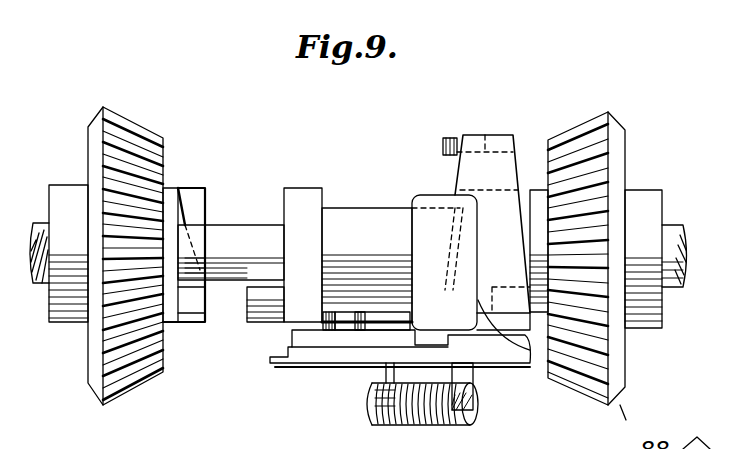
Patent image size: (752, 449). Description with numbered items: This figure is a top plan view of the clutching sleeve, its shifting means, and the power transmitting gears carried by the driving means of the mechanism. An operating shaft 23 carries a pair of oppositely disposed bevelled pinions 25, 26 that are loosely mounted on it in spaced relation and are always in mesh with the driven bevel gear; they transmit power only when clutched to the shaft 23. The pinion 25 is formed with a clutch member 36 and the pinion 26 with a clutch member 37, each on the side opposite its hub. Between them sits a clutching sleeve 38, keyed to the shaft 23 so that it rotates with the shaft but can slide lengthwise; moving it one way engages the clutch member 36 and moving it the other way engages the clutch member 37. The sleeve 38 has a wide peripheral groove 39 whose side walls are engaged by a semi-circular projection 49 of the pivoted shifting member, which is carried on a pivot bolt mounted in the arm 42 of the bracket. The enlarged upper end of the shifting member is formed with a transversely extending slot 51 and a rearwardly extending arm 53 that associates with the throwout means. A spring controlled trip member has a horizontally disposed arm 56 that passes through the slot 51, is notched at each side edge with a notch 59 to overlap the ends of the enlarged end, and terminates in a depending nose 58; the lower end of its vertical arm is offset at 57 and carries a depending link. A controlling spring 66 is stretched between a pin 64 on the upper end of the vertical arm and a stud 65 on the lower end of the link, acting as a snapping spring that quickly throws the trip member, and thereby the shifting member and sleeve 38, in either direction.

The operating shaft 23 is at (220, 237).
The bevelled pinion 25 is at (137, 128).
The bevelled pinion 26 is at (580, 125).
The clutch member 36 is at (192, 322).
The clutch member 37 is at (540, 328).
The clutching sleeve 38 is at (298, 190).
The peripheral groove 39 is at (352, 208).
The arm 42 is at (358, 336).
The semi-circular projection 49 is at (347, 320).
The transversely extending slot 51 is at (382, 320).
The rearwardly extending arm 53 is at (436, 200).
The horizontally disposed arm 56 is at (495, 175).
The offset portion 57 is at (280, 355).
The depending nose 58 is at (443, 143).
The notch 59 is at (523, 337).
The stud or pin 64 is at (474, 388).
The stud 65 is at (395, 373).
The controlling spring 66 is at (430, 412).